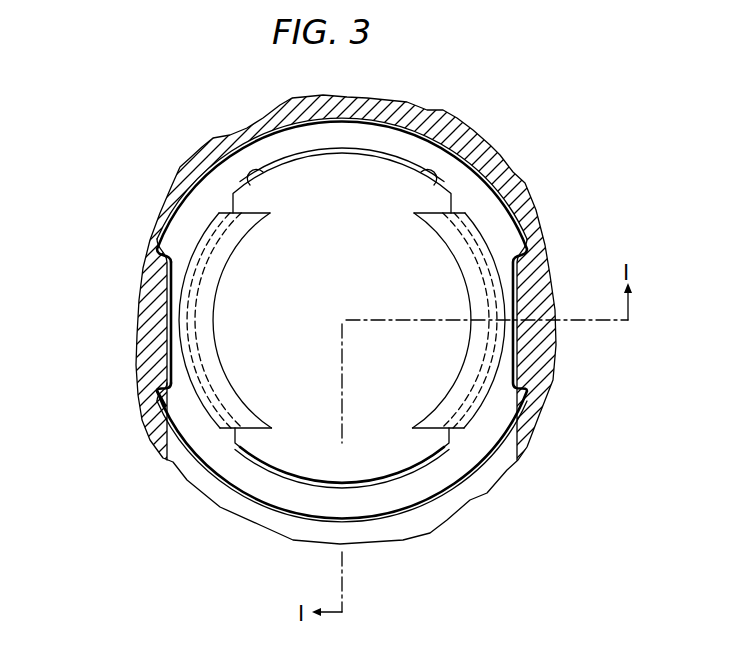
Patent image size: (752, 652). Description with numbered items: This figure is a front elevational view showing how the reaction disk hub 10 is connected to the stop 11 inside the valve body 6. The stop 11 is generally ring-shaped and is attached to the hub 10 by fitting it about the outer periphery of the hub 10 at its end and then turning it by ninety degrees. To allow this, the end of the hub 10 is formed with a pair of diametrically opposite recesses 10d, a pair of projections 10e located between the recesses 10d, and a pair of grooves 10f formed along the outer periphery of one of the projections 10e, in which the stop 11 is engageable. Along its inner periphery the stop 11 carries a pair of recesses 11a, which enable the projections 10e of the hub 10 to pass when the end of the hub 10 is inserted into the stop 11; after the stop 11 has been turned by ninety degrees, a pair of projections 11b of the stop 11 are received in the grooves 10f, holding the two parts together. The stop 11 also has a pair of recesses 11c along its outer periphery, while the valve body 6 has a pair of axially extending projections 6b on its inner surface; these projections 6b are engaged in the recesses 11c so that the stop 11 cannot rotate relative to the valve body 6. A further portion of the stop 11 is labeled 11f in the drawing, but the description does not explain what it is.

The housing 6 is at (558, 357).
The flat portion of housing bore 6b is at (162, 270).
The bearing holder ring 10 is at (205, 435).
The recess of bearing holder 10d is at (381, 178).
The outer peripheral surface of bearing holder 10e is at (210, 230).
The groove of bearing holder 10f is at (192, 355).
The retaining ring 11 is at (500, 176).
The tab of retaining ring 11a is at (263, 171).
The cylindrical wall of retaining ring 11b is at (494, 298).
The flat portion of retaining ring 11c is at (165, 316).
The bent portion of retaining ring 11f is at (163, 399).